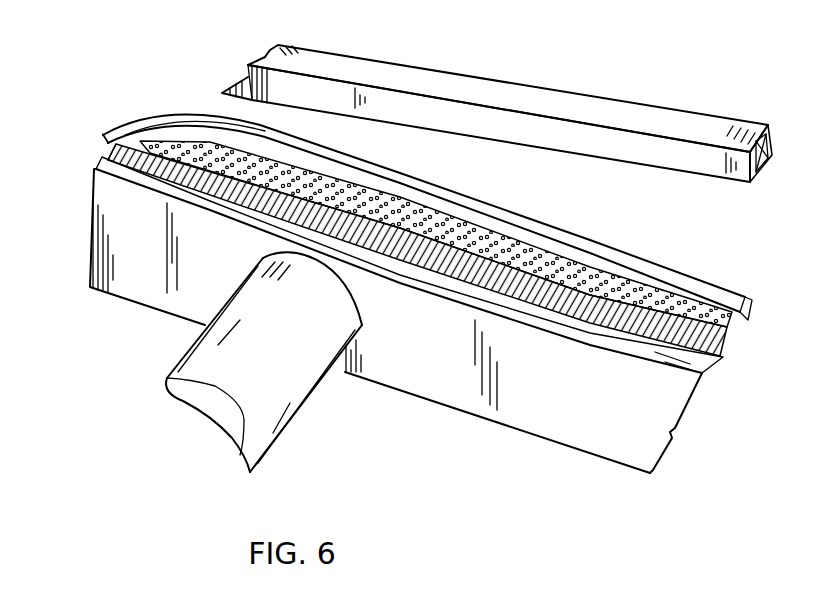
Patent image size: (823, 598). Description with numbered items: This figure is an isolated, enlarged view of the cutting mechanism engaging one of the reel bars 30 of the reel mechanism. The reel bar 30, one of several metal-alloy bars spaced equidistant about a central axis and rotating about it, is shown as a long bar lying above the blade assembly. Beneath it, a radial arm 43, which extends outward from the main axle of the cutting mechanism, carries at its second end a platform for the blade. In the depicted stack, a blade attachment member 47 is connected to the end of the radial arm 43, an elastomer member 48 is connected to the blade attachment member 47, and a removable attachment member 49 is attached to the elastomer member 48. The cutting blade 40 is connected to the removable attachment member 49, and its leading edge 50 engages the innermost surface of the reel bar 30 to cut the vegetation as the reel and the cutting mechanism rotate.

The reel bar 30 is at (480, 79).
The cutting blade 40 is at (685, 289).
The radial arm 43 is at (287, 435).
The blade attachment member 47 is at (672, 428).
The elastomer member 48 is at (114, 147).
The removable attachment member 49 is at (727, 333).
The leading edge 50 is at (193, 117).